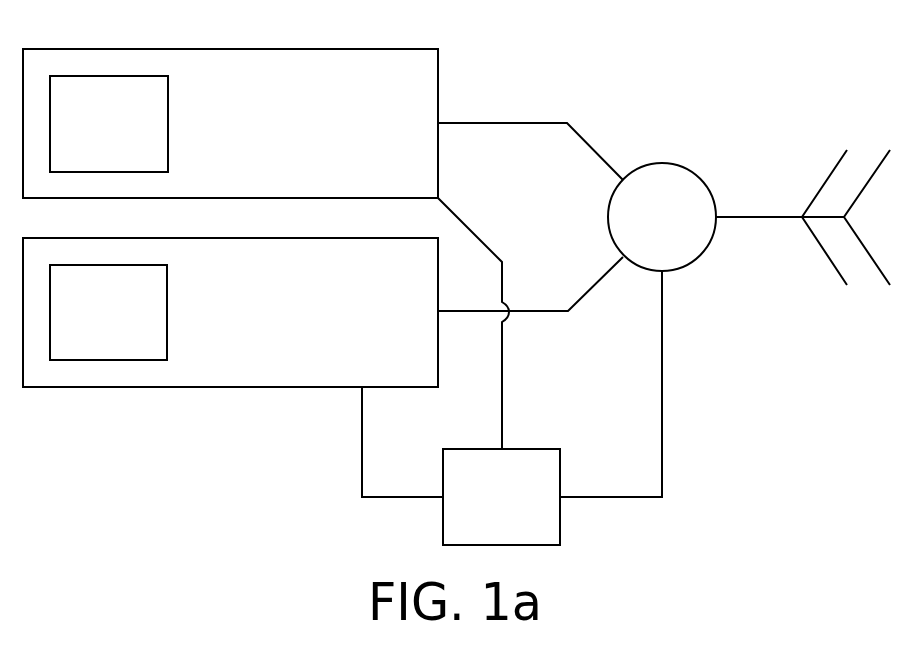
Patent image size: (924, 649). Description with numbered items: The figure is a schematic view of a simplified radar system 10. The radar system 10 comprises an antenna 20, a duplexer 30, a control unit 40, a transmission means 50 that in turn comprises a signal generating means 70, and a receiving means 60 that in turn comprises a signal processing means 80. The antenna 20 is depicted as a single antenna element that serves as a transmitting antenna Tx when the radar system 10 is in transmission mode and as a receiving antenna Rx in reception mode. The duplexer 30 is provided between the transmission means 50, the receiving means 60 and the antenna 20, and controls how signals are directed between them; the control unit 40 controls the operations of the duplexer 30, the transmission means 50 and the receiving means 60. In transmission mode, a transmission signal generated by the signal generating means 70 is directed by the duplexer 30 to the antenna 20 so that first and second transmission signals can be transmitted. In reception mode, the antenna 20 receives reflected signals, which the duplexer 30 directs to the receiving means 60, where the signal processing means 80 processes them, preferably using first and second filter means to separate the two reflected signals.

The radar system 10 is at (210, 487).
The antenna 20 is at (798, 126).
The duplexer 30 is at (677, 229).
The control unit 40 is at (518, 508).
The transmission means 50 is at (424, 88).
The receiving means 60 is at (424, 278).
The signal generating means 70 is at (124, 138).
The signal processing means 80 is at (124, 326).